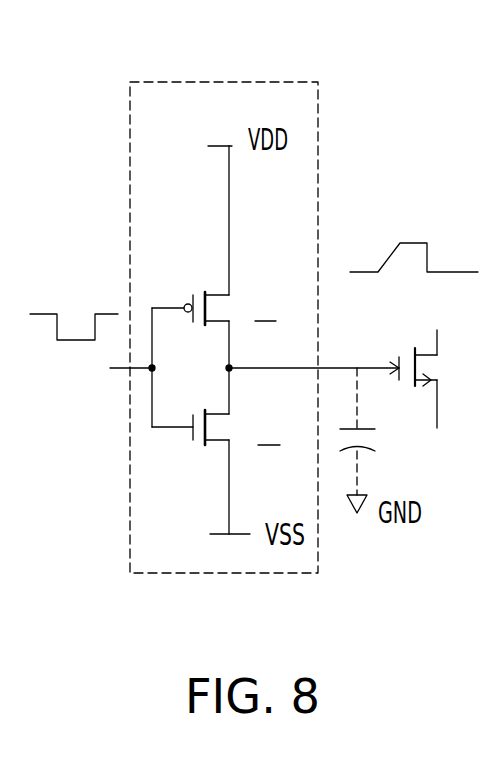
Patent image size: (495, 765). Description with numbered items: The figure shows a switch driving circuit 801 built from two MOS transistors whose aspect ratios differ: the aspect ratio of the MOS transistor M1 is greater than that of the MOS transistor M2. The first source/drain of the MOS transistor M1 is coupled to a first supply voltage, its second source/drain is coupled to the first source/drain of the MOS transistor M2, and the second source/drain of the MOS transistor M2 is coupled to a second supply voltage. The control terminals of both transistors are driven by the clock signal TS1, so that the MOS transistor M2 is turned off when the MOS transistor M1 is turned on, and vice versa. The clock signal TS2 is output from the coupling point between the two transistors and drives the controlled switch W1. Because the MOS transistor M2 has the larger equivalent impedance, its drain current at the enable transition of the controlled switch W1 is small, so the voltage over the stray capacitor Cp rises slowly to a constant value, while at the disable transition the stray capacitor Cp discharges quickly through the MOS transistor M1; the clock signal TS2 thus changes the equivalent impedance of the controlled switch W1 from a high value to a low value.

The switch driving circuit 801 is at (318, 102).
The MOS transistor M1 is at (225, 430).
The MOS transistor M2 is at (224, 306).
The clock signal TS1 is at (91, 353).
The clock signal TS2 is at (344, 368).
The controlled switch W1 is at (440, 379).
The stray capacitor Cp is at (376, 431).